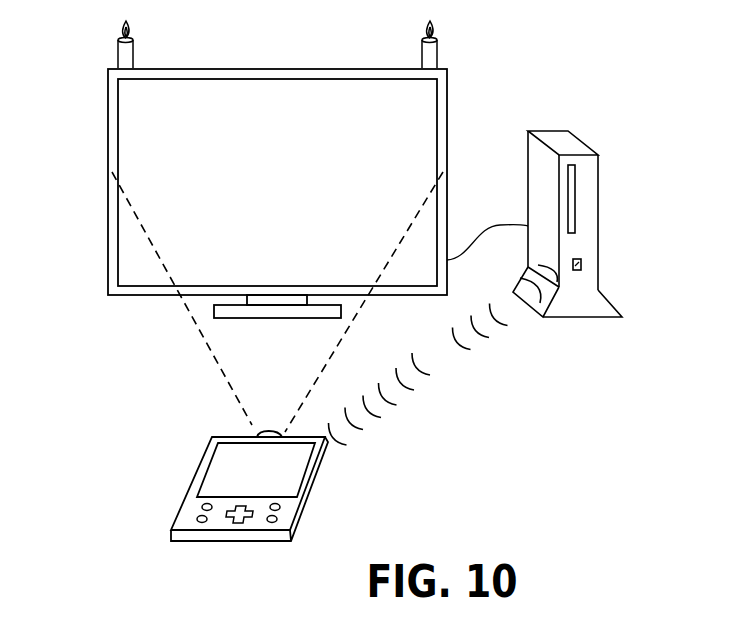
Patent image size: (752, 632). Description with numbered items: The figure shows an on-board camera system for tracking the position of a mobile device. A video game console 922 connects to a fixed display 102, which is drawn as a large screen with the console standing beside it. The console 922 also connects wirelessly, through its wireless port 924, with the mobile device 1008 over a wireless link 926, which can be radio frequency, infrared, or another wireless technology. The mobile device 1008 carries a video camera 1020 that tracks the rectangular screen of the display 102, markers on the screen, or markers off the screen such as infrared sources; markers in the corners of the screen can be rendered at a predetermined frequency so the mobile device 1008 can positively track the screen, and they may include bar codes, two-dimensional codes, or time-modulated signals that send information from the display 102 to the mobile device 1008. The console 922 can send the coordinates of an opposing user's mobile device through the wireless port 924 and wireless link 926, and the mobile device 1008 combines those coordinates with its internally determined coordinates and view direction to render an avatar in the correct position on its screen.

The fixed display 102 is at (112, 89).
The video game console 922 is at (589, 198).
The wireless port 924 is at (583, 264).
The wireless link 926 is at (430, 375).
The mobile device 1008 is at (243, 450).
The video camera 1020 is at (265, 432).